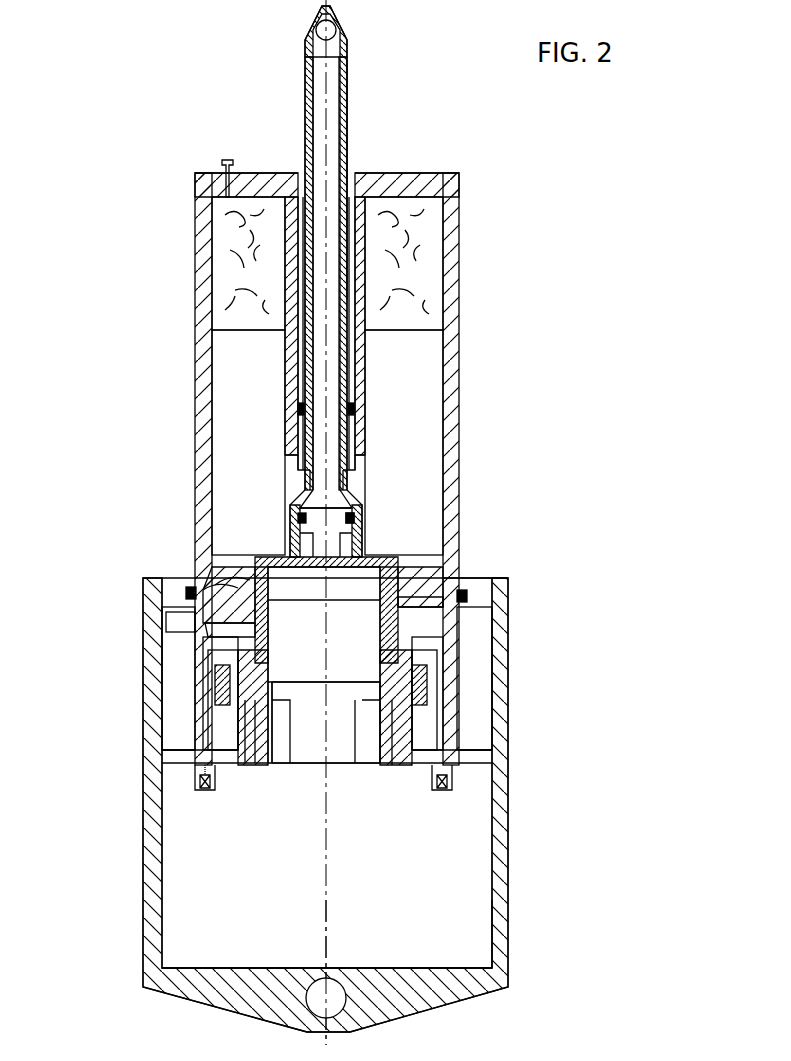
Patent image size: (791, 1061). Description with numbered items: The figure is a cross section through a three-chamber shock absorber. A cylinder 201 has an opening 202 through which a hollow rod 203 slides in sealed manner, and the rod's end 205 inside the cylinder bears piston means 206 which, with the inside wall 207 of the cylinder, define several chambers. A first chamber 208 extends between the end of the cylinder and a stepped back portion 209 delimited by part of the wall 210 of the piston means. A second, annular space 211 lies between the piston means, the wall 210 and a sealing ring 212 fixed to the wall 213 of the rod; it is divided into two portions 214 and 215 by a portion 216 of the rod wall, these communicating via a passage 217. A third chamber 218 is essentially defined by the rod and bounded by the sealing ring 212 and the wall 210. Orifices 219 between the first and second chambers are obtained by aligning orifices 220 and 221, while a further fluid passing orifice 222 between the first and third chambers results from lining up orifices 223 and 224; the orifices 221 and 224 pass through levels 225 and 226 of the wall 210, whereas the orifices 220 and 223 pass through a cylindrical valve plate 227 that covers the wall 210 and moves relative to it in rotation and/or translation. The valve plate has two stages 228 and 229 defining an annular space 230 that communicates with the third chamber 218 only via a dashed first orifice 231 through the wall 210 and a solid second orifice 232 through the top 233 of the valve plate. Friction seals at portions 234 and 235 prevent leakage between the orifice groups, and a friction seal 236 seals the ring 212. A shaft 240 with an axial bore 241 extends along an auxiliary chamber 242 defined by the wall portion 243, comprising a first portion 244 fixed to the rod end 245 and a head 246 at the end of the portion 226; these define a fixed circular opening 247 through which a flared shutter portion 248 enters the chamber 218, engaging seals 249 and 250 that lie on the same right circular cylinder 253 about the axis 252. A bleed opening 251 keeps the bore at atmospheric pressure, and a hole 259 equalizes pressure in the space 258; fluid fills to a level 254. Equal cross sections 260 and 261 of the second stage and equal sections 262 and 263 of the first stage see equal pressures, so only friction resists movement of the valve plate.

The cylinder 201 is at (512, 790).
The opening 202 is at (465, 582).
The hollow rod 203 is at (462, 414).
The rod end 205 is at (455, 725).
The piston means 206 is at (432, 785).
The inside wall of the cylinder 207 is at (490, 940).
The first chamber 208 is at (200, 940).
The stepped back portion 209 is at (300, 766).
The wall of the piston means 210 is at (278, 690).
The annular space (second chamber) 211 is at (430, 713).
The sealing ring 212 is at (257, 588).
The wall of the rod 213 is at (280, 560).
The first portion of annular chamber 214 is at (180, 670).
The second portion of annular chamber 215 is at (245, 700).
The portion of the rod wall 216 is at (200, 640).
The passage 217 is at (220, 700).
The third chamber 218 is at (425, 350).
The orifices 219 is at (235, 775).
The orifices (second group) 220 is at (190, 757).
The first orifices 221 is at (345, 765).
The valve body 222 is at (262, 565).
The orifices (second group) 223 is at (220, 600).
The first orifices 224 is at (300, 620).
The level of the wall 225 is at (255, 768).
The level of the wall 226 is at (378, 700).
The valve plate 227 is at (267, 554).
The first stage 228 is at (185, 592).
The second stage 229 is at (410, 680).
The annular space 230 is at (420, 645).
The first orifice 231 is at (404, 565).
The second orifice 232 is at (362, 548).
The top of the valve plate 233 is at (400, 560).
The friction seal portion 234 is at (392, 780).
The friction seal portion 235 is at (425, 585).
The friction seal 236 is at (470, 600).
The shaft 240 is at (300, 118).
The axial bore 241 is at (340, 95).
The auxiliary chamber 242 is at (352, 275).
The wall portion of the rod 243 is at (364, 242).
The first portion of the wall 244 is at (288, 280).
The end of the rod 245 is at (372, 178).
The head 246 is at (330, 590).
The circular opening 247 is at (350, 468).
The flared shutter portion 248 is at (354, 412).
The seal 249 is at (298, 410).
The seal 250 is at (365, 520).
The bleed opening 251 is at (305, 60).
The axis 252 is at (330, 950).
The right circular cylinder 253 is at (292, 447).
The fluid level 254 is at (415, 320).
The space 258 is at (300, 220).
The hole 259 is at (305, 355).
The cross section 260 is at (245, 745).
The cross section 261 is at (240, 670).
The section 262 is at (277, 712).
The section 263 is at (260, 570).